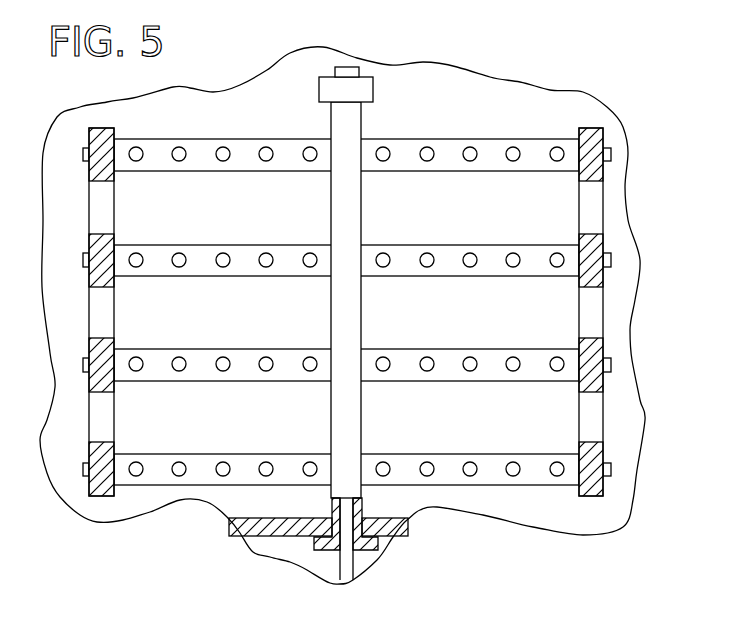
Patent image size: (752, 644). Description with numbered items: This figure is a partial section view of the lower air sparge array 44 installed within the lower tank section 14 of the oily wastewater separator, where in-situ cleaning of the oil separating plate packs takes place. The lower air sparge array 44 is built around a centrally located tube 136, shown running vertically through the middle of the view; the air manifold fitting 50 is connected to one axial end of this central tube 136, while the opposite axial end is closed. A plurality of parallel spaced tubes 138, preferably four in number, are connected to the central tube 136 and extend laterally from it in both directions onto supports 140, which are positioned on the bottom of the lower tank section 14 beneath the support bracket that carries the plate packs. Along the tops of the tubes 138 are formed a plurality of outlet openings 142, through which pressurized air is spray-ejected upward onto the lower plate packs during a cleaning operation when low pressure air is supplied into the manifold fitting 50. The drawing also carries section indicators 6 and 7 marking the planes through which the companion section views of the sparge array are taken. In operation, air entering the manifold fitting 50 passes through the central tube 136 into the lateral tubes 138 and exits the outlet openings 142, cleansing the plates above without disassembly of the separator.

The lower air sparge array 44 is at (511, 117).
The lower tank section 14 is at (408, 532).
The manifold fitting 50 is at (321, 552).
The central tube 136 is at (364, 212).
The parallel spaced tubes 138 is at (222, 385).
The supports 140 is at (608, 421).
The outlet openings 142 is at (471, 478).
The section line 6- 6 is at (102, 310).
The section line 7- 7 is at (405, 363).